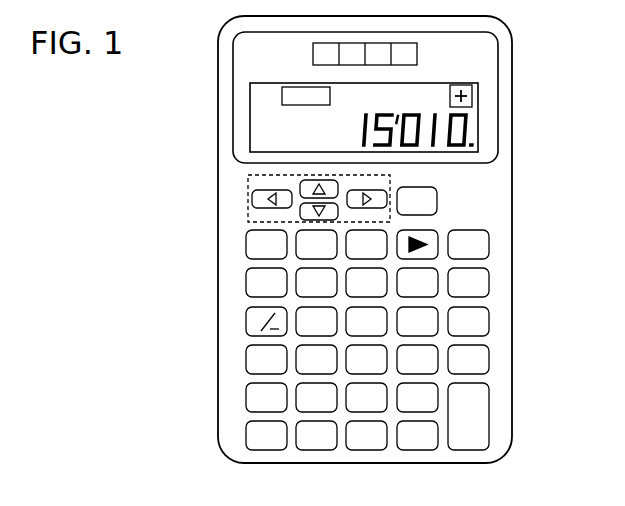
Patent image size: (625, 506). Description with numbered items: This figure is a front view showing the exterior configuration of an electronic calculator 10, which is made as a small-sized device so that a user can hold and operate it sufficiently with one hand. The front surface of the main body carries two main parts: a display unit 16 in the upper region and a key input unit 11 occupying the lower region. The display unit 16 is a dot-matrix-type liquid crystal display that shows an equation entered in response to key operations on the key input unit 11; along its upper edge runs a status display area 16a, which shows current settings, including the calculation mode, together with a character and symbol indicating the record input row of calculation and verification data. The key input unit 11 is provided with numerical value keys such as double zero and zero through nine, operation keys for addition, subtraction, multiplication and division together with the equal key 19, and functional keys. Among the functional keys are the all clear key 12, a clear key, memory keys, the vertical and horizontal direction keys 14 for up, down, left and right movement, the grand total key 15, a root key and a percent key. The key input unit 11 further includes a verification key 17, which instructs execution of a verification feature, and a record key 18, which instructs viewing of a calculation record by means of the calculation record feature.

The electronic calculator 10 is at (513, 52).
The key input unit 11 is at (369, 335).
The all clear key 12 is at (246, 398).
The vertical and horizontal direction keys 14 is at (248, 188).
The grand total key 15 is at (475, 230).
The display unit 16 is at (363, 117).
The status display area 16a is at (263, 118).
The verification key 17 is at (246, 245).
The record key 18 is at (437, 201).
The equal key 19 is at (417, 460).